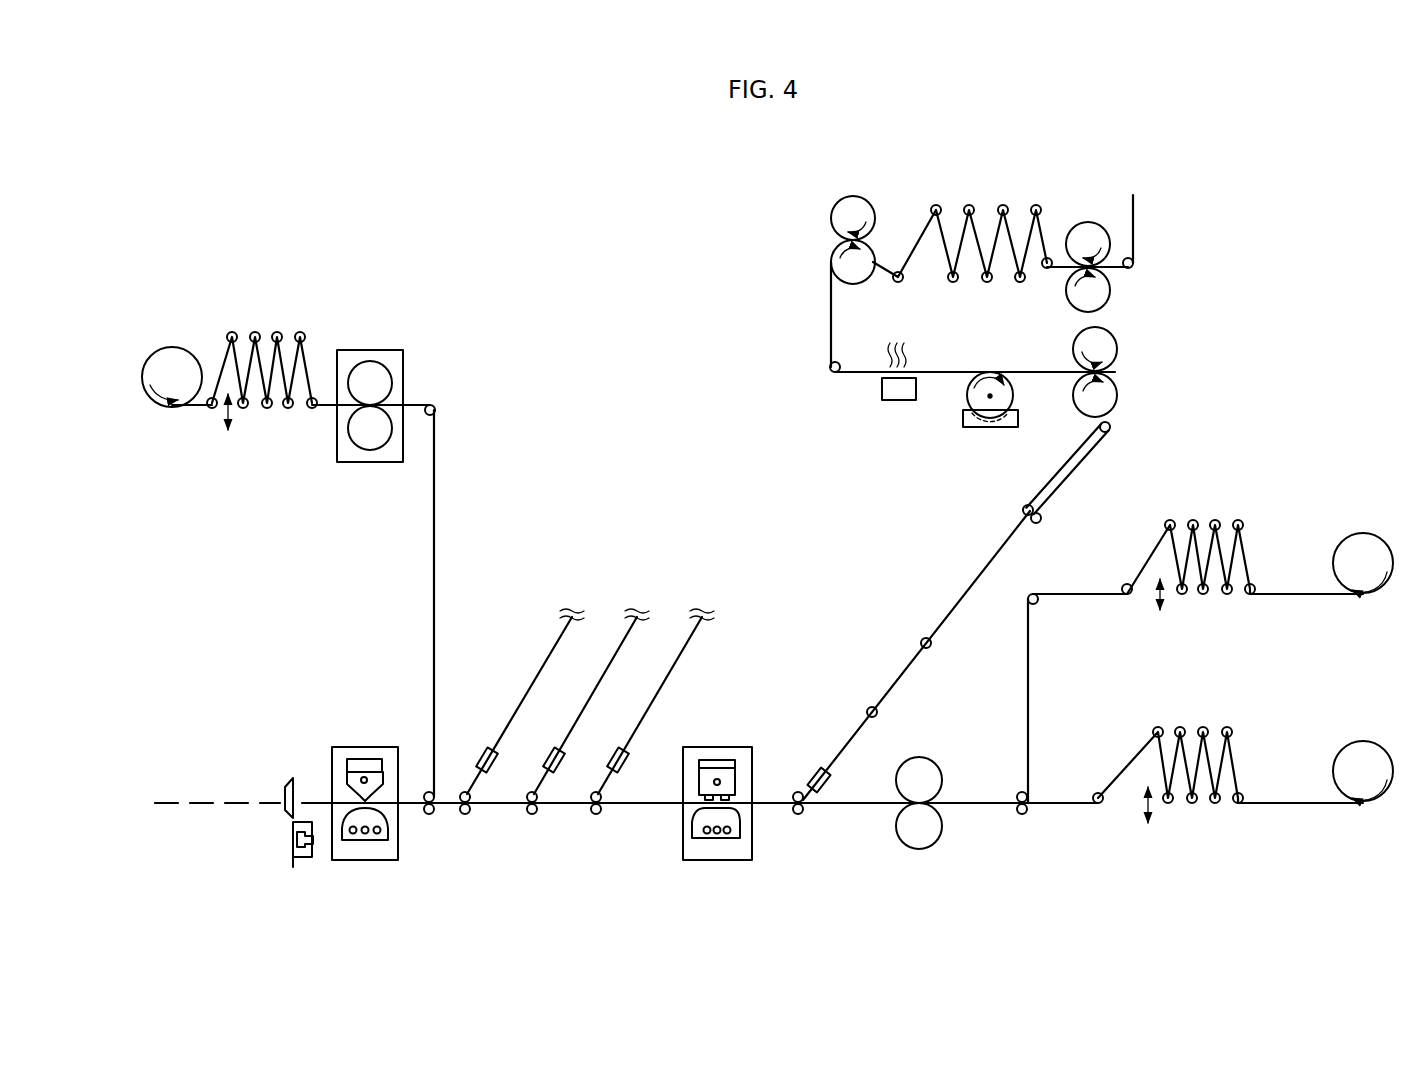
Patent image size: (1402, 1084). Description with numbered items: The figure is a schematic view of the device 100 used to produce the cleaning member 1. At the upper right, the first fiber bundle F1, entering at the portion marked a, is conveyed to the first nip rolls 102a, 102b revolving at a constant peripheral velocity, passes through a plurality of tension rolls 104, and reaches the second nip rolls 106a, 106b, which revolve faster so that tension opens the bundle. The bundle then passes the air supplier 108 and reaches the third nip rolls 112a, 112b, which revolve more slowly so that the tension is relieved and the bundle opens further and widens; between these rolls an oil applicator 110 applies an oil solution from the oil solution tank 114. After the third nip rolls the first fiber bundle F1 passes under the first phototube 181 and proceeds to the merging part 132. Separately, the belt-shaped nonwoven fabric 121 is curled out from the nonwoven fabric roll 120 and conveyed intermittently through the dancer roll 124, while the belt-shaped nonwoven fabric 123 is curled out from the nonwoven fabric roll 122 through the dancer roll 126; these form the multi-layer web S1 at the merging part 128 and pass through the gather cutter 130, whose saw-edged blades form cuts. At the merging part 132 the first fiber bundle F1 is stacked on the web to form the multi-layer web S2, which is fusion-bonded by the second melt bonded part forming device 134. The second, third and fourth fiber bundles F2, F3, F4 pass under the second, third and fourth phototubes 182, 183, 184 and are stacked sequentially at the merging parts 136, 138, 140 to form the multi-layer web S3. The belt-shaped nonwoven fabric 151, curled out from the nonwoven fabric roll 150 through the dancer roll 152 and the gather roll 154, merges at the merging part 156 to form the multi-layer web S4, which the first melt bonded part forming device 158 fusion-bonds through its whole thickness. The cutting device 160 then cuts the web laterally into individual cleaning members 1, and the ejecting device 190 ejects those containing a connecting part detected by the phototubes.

The device 100 is at (1243, 200).
The cleaning member 1 is at (233, 805).
The ejecting device 190 is at (277, 805).
The cutting device 160 is at (303, 858).
The first melt bonded part forming device 158 is at (350, 747).
The multi-layer web S4 is at (417, 797).
The merging part 156 is at (429, 822).
The multi-layer web S3 is at (445, 807).
The nonwoven fabric roll 150 is at (172, 362).
The belt-shaped nonwoven fabric 151 is at (192, 408).
The dancer roll 152 is at (280, 317).
The gather roll 154 is at (368, 340).
The merging part 140 is at (470, 818).
The merging part 138 is at (537, 818).
The merging part 136 is at (602, 818).
The fourth fiber bundle F4 is at (563, 640).
The third fiber bundle F3 is at (628, 640).
The second fiber bundle F2 is at (693, 640).
The fourth phototube 184 is at (485, 753).
The third phototube 183 is at (552, 753).
The second phototube 182 is at (617, 753).
The second melt bonded part forming device 134 is at (717, 747).
The multi-layer web S2 is at (773, 798).
The merging part 132 is at (805, 820).
The first fiber bundle F1 is at (843, 752).
The first phototube 181 is at (815, 760).
The gather cutter 130 is at (915, 768).
The multi-layer web S1 is at (978, 798).
The merging part 128 is at (1033, 796).
The dancer roll 126 is at (1188, 510).
The belt-shaped nonwoven fabric 123 is at (1283, 593).
The nonwoven fabric roll 122 is at (1363, 545).
The dancer roll 124 is at (1188, 717).
The belt-shaped nonwoven fabric 121 is at (1275, 800).
The nonwoven fabric roll 120 is at (1363, 752).
The second nip roll 106a is at (858, 202).
The second nip roll 106b is at (850, 285).
The tension rolls 104 is at (1002, 207).
The first nip roll 102a is at (1088, 222).
The first nip roll 102b is at (1110, 300).
The portion of the fiber bundle a is at (1145, 193).
The third nip roll 112a is at (1117, 345).
The third nip roll 112b is at (1117, 400).
The air supplier 108 is at (888, 390).
The oil applicator 110 is at (967, 400).
The oil solution tank 114 is at (977, 427).